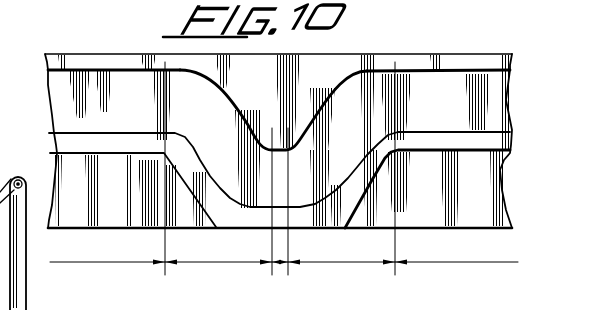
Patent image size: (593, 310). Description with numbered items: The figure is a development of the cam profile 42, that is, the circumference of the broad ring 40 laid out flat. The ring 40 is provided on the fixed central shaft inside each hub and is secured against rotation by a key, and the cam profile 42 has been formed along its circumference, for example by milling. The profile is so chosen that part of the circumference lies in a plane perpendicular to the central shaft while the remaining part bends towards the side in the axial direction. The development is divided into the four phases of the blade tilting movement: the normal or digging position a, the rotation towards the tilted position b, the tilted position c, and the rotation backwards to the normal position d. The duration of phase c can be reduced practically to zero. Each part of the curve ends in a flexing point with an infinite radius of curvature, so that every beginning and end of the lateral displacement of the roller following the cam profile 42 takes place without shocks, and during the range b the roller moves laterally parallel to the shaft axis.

The broad ring 40 is at (362, 66).
The cam profile 42 is at (416, 75).
The normal or digging position a is at (284, 168).
The rotation towards the tilted position b is at (218, 201).
The tilted position c is at (280, 201).
The rotation backwards to the normal position d is at (341, 168).